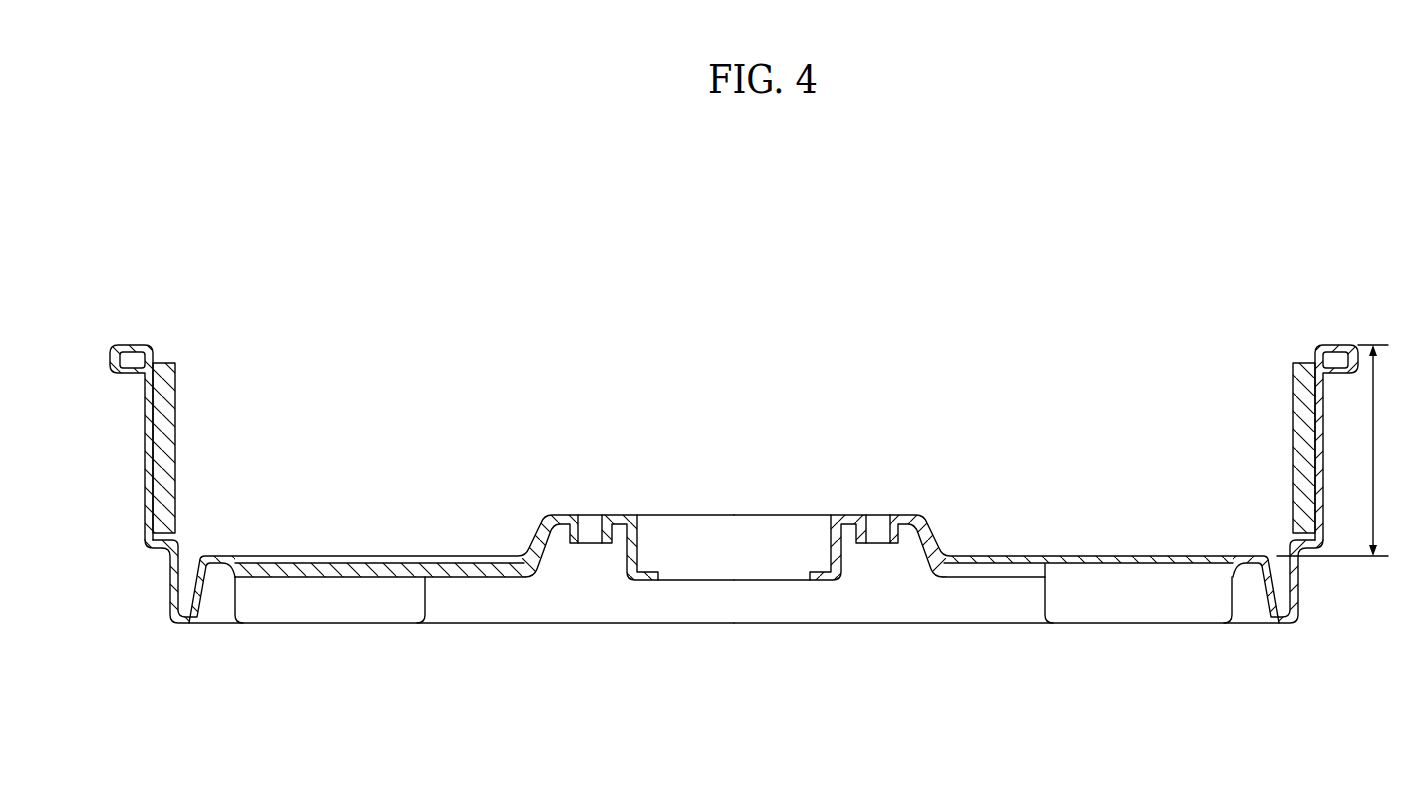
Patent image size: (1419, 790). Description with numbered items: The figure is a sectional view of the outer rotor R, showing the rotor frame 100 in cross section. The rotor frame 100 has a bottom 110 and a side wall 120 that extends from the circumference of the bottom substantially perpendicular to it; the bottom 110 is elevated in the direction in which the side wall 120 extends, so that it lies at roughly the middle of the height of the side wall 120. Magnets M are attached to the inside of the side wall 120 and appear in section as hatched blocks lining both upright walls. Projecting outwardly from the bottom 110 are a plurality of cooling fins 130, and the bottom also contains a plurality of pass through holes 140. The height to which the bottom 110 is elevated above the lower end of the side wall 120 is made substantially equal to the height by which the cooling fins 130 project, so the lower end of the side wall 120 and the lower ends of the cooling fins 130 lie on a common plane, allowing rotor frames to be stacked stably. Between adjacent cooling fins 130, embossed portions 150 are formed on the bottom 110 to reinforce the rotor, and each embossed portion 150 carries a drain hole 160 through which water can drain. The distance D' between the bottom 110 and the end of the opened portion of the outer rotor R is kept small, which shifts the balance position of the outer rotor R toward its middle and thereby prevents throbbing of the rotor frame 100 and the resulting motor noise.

The rotor frame 100 is at (160, 582).
The bottom 110 is at (990, 556).
The side wall 120 is at (150, 463).
The cooling fin 130 is at (310, 607).
The pass through hole 140 is at (1045, 562).
The embossed portion 150 is at (476, 580).
The drain hole 160 is at (362, 572).
The magnet M is at (165, 409).
The outer rotor R is at (753, 283).
The distance D' is at (1341, 450).